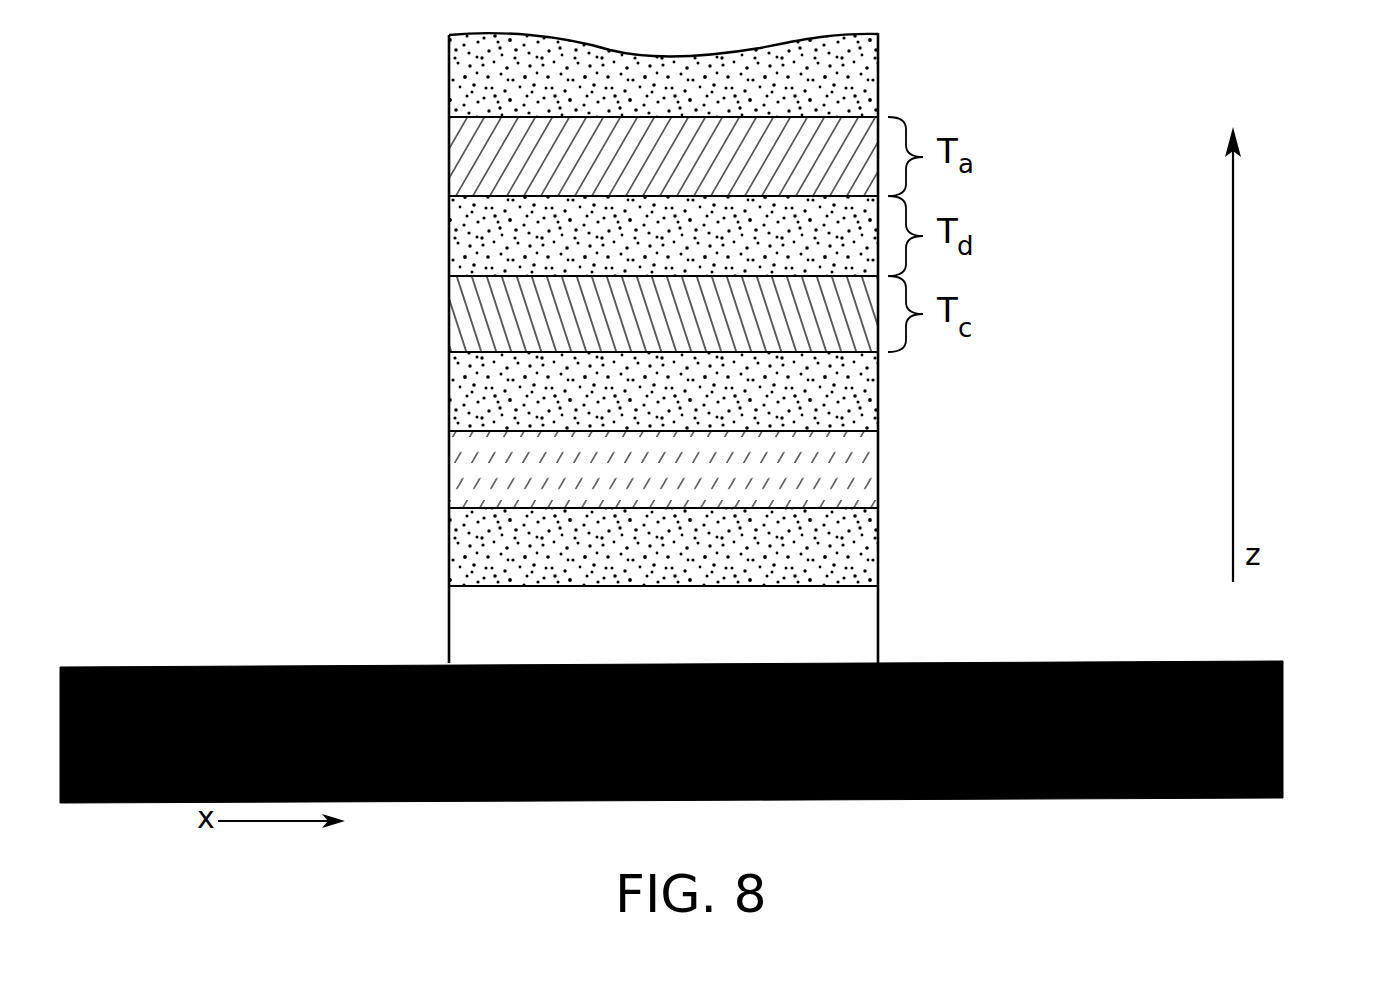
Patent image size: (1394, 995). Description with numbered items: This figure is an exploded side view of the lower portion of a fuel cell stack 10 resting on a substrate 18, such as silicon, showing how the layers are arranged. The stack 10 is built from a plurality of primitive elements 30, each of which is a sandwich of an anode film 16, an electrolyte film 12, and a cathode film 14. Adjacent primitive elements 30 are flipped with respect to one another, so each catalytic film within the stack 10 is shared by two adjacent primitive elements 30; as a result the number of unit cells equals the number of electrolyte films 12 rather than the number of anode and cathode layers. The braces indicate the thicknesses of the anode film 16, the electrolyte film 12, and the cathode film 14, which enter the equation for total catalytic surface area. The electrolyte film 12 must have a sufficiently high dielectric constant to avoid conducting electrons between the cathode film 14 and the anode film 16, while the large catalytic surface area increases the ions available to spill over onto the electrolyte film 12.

The stack 10 is at (922, 398).
The electrolyte film 12 is at (449, 80).
The cathode film 14 is at (449, 289).
The anode film 16 is at (449, 144).
The substrate 18 is at (1284, 683).
The primitive element 30 is at (447, 308).